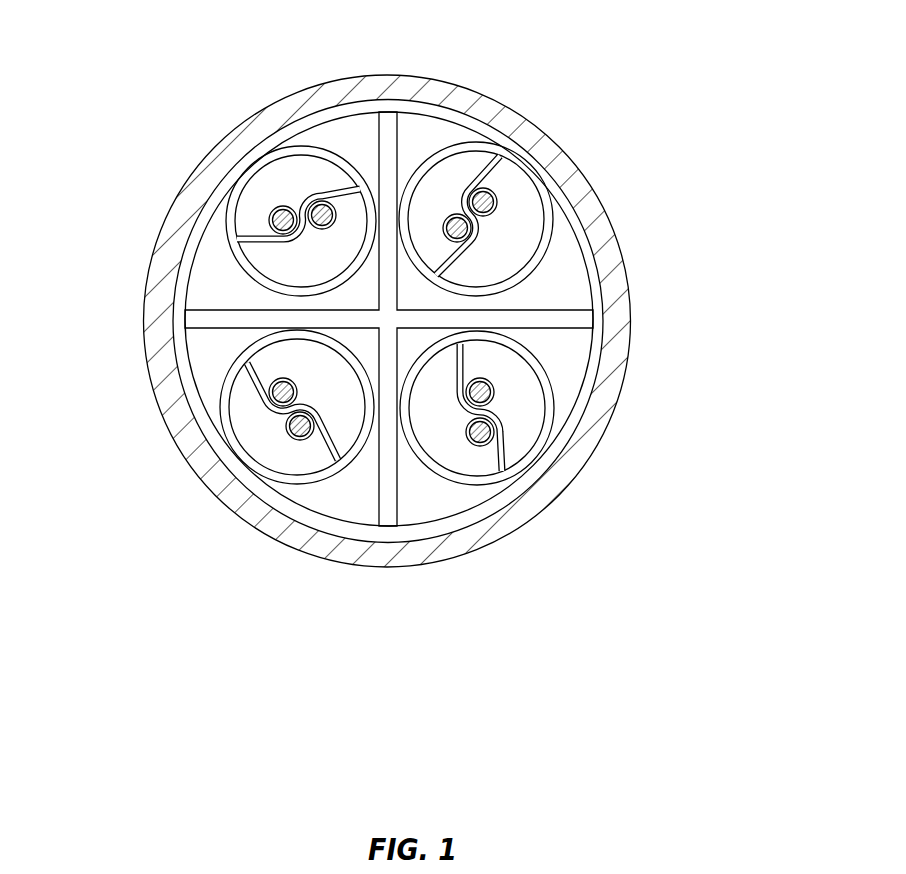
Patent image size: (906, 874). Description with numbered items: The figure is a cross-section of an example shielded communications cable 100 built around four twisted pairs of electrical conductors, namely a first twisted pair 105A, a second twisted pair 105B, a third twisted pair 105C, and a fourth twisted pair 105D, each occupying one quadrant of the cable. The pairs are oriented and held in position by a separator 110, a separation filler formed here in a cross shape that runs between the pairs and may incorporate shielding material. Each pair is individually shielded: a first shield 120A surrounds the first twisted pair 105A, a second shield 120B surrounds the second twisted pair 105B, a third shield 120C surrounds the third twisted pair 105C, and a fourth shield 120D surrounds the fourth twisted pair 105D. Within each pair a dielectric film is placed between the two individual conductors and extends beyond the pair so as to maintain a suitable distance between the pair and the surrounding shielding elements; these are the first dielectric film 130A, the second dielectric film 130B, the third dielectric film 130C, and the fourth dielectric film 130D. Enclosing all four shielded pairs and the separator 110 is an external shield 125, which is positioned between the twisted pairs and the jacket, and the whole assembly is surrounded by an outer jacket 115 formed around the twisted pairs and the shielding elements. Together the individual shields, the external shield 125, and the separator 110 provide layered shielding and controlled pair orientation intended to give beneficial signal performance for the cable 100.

The cable 100 is at (419, 344).
The first twisted pair 105A is at (528, 210).
The second twisted pair 105B is at (518, 432).
The third twisted pair 105C is at (277, 428).
The fourth twisted pair 105D is at (273, 193).
The separator 110 is at (373, 475).
The outer jacket 115 is at (627, 262).
The first shield 120A is at (550, 240).
The second shield 120B is at (558, 395).
The third shield 120C is at (288, 487).
The fourth shield 120D is at (308, 141).
The external shield 125 is at (508, 120).
The first dielectric film 130A is at (480, 247).
The second dielectric film 130B is at (510, 453).
The third dielectric film 130C is at (250, 385).
The fourth dielectric film 130D is at (252, 248).